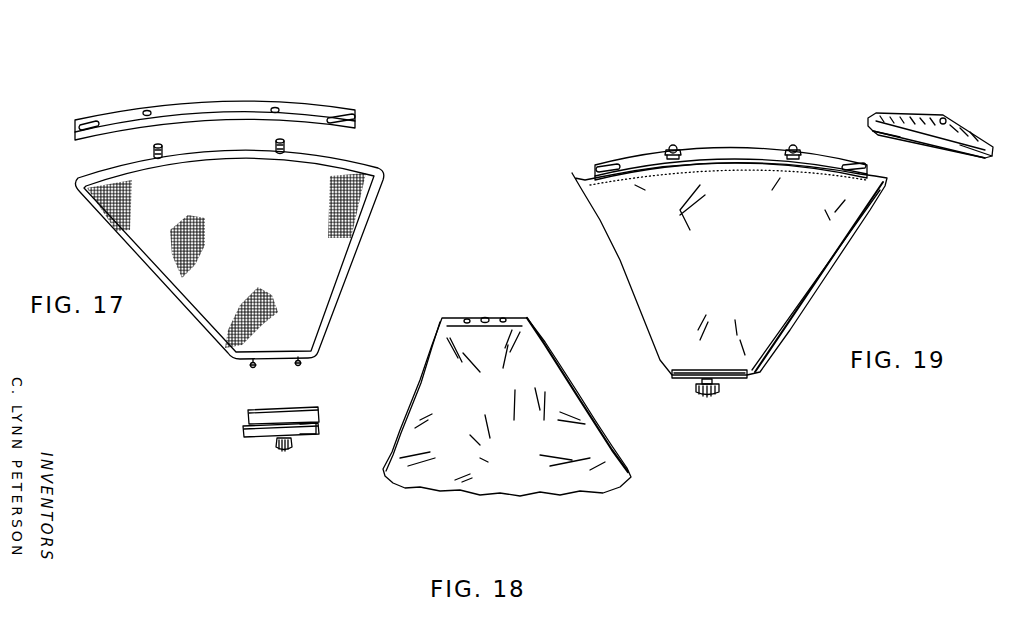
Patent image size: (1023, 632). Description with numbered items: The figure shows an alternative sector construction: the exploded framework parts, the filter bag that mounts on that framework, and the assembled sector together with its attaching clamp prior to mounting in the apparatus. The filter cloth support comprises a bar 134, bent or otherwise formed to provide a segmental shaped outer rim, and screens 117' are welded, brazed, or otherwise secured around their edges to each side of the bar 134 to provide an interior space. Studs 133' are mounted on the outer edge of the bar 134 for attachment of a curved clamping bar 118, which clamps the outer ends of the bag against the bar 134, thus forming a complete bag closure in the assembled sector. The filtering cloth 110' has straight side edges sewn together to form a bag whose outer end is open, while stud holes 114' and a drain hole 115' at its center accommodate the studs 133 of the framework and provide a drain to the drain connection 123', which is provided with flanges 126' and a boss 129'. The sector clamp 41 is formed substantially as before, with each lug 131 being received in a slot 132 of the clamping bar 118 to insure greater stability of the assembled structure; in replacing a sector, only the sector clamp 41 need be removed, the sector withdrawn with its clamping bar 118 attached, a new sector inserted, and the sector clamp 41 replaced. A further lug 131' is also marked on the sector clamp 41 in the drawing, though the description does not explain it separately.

In FIG. 17, the arcuate retaining bar 118 is at (202, 108).
In FIG. 19, the arcuate retaining bar 118 is at (727, 155).
In FIG. 17, the slot in retaining bar 132 is at (343, 117).
In FIG. 19, the slot in retaining bar 132 is at (602, 162).
In FIG. 17, the fastening pin / nut 133' is at (243, 142).
In FIG. 19, the fastening pin / nut 133' is at (759, 123).
In FIG. 17, the frame 134 is at (380, 183).
In FIG. 17, the mesh screen 117' is at (249, 260).
In FIG. 17, the fastening screw 133 is at (244, 380).
In FIG. 17, the clamp bars 126' is at (276, 417).
In FIG. 17, the clamp bracket 123' is at (326, 452).
In FIG. 19, the clamp bracket 123' is at (730, 390).
In FIG. 17, the thumb nut 129' is at (262, 469).
In FIG. 19, the thumb nut 129' is at (687, 410).
In FIG. 18, the filter bag 110' is at (507, 407).
In FIG. 19, the filter bag 110' is at (729, 269).
In FIG. 18, the bag aperture 114' is at (517, 302).
In FIG. 18, the bag center aperture 115' is at (517, 281).
In FIG. 19, the clip member 41 is at (887, 118).
In FIG. 19, the clip edge 131 is at (908, 151).
In FIG. 19, the clip lower edge 131' is at (990, 170).